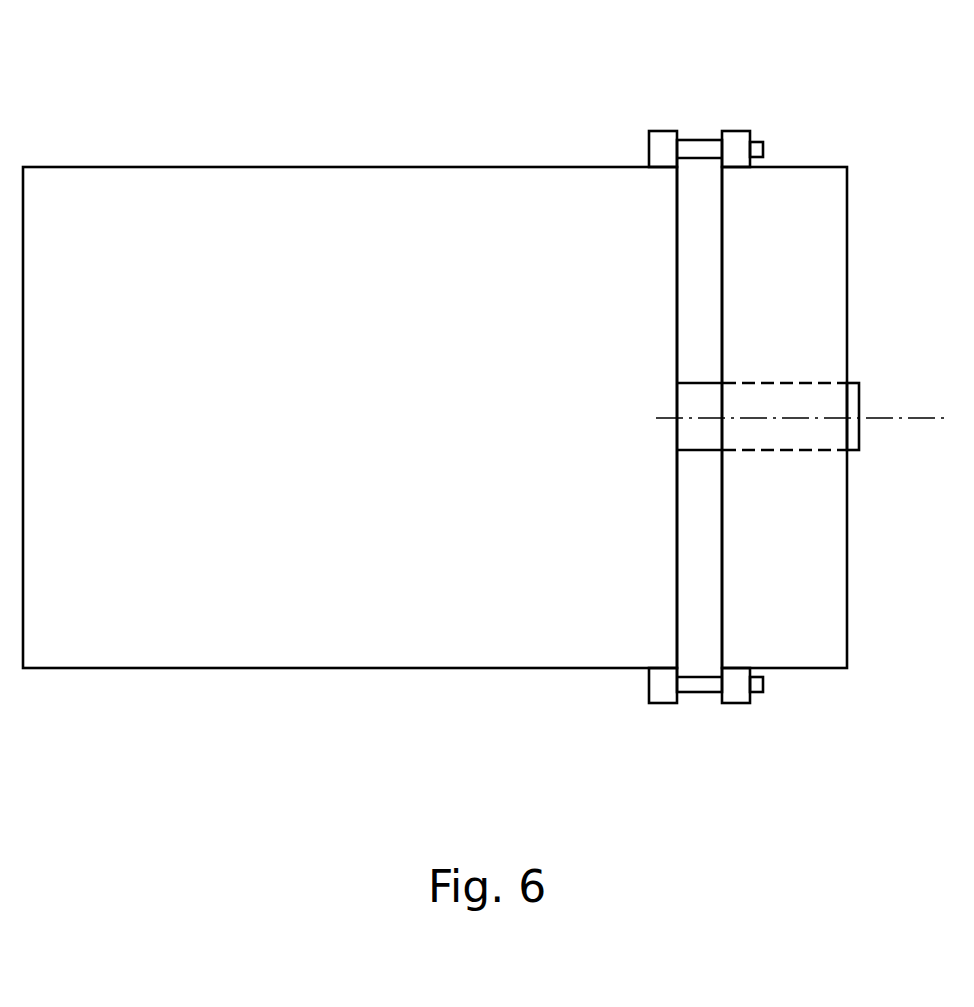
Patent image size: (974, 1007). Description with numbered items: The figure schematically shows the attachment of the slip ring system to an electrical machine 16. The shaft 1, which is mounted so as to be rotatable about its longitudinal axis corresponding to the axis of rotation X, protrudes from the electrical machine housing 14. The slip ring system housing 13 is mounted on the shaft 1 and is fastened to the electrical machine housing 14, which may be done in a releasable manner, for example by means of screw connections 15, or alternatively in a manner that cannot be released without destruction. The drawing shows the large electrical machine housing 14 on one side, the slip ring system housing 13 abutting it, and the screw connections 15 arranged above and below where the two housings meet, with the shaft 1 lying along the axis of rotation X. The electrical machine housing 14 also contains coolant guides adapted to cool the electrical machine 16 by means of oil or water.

The shaft 1 is at (851, 398).
The slip ring system housing 13 is at (847, 247).
The electrical machine housing 14 is at (310, 166).
The screw connections 15 is at (698, 139).
The electrical machine 16 is at (416, 122).
The axis of rotation X is at (917, 420).